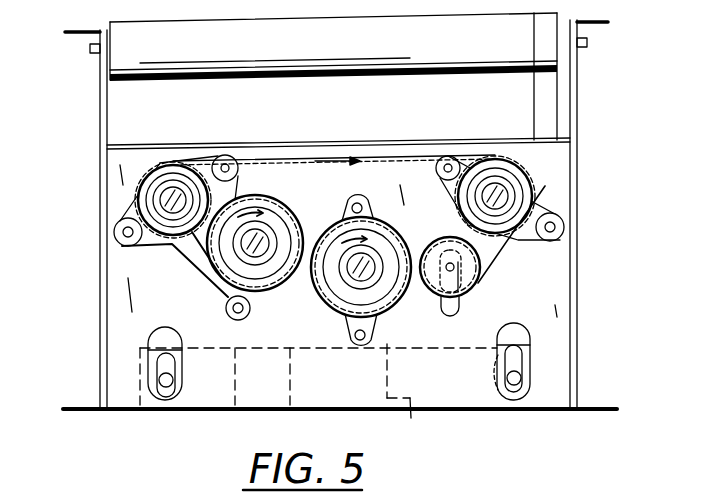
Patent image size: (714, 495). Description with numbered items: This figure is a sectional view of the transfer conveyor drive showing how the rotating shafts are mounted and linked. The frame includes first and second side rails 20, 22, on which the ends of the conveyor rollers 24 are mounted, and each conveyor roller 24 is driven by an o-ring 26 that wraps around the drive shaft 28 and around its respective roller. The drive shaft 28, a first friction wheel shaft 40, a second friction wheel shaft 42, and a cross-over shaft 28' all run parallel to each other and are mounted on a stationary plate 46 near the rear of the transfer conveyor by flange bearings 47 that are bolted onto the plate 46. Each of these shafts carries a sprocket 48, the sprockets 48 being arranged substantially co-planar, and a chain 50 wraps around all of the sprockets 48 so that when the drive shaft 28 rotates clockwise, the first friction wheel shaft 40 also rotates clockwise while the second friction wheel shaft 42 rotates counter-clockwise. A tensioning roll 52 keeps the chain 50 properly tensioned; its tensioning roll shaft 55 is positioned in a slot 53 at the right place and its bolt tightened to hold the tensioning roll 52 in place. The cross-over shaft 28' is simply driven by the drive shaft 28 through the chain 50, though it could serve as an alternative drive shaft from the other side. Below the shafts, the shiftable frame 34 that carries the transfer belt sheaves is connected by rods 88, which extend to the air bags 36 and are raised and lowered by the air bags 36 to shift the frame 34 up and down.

The first side rail 20 is at (578, 88).
The second side rail 22 is at (100, 118).
The conveyor roller 24 is at (430, 50).
The o-ring 26 is at (534, 106).
The drive shaft 28 is at (550, 196).
The cross-over shaft 28' is at (118, 200).
The shiftable frame 34 is at (235, 405).
The air bag 36 is at (412, 408).
The first friction wheel shaft 40 is at (262, 253).
The second friction wheel shaft 42 is at (352, 285).
The stationary plate 46 is at (130, 300).
The flange bearing 47 is at (358, 200).
The sprocket 48 is at (209, 163).
The chain 50 is at (292, 168).
The tensioning roll 52 is at (482, 280).
The slot 53 is at (460, 313).
The tensioning roll shaft 55 is at (455, 267).
The rod 88 is at (170, 382).